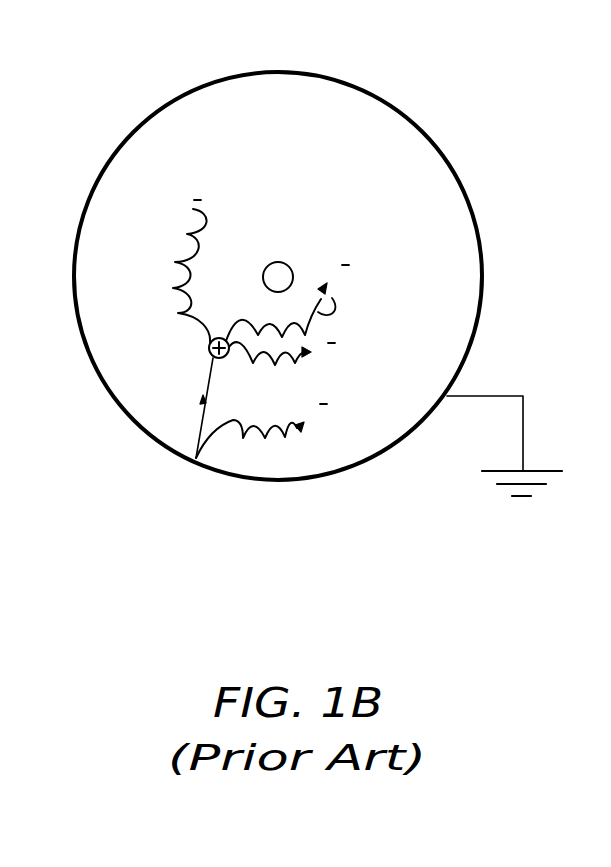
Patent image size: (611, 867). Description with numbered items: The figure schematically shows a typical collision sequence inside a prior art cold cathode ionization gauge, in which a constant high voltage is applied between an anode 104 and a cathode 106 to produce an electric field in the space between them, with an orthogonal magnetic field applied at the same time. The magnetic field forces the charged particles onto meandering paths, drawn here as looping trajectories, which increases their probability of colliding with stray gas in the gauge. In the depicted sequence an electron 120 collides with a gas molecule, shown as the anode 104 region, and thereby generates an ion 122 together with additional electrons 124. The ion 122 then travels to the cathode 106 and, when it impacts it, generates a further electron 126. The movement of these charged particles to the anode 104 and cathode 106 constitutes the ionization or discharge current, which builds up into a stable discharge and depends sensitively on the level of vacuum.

The cathode 106 is at (429, 137).
The anode 104 is at (281, 262).
The ion 122 is at (221, 338).
The electron 120 is at (344, 274).
The additional electrons 124 is at (187, 201).
The electron 126 is at (318, 415).